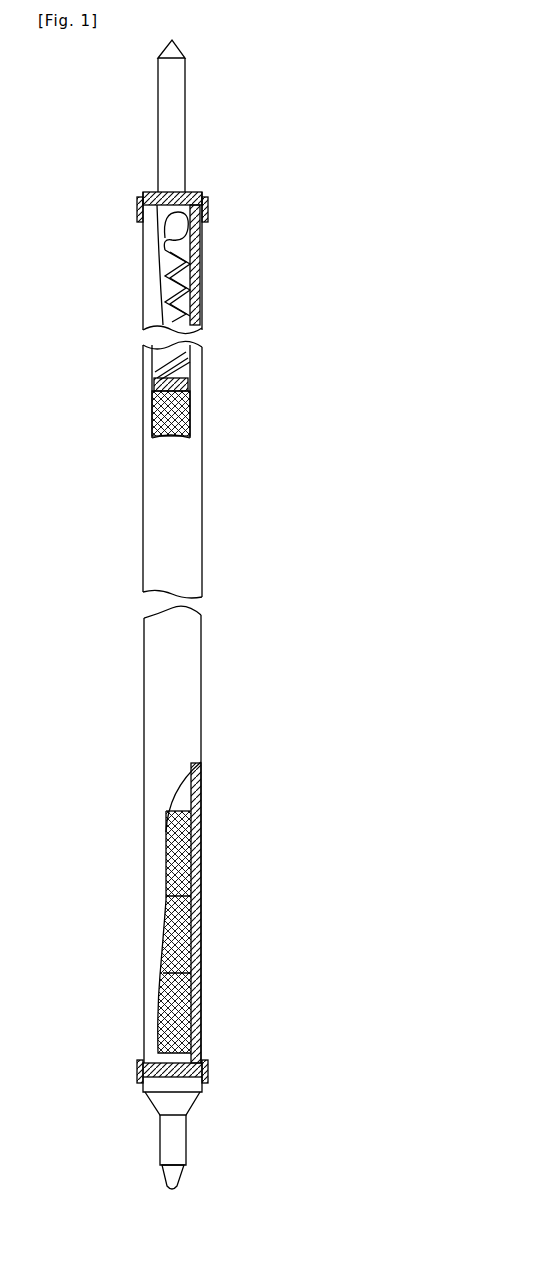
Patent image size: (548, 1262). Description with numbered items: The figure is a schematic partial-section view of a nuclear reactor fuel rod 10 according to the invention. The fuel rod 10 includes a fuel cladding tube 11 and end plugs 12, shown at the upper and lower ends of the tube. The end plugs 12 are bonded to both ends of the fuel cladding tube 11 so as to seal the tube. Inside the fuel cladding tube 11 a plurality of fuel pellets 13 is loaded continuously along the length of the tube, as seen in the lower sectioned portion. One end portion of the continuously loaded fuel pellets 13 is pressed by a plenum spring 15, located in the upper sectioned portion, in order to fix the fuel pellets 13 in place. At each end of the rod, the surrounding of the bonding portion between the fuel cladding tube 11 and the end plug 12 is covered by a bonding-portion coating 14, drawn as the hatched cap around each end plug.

The nuclear reactor fuel rod 10 is at (326, 435).
The fuel cladding tube 11 is at (196, 905).
The end plug 12 is at (178, 128).
The fuel pellet 13 is at (180, 857).
The bonding-portion coating 14 is at (203, 205).
The plenum spring 15 is at (180, 272).